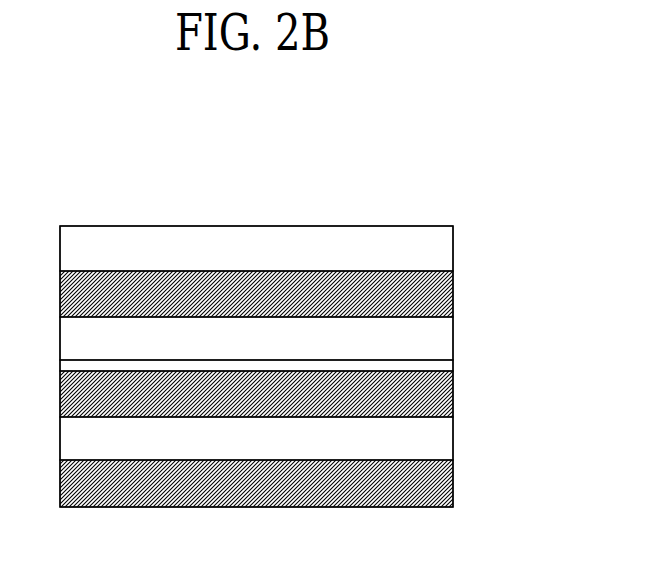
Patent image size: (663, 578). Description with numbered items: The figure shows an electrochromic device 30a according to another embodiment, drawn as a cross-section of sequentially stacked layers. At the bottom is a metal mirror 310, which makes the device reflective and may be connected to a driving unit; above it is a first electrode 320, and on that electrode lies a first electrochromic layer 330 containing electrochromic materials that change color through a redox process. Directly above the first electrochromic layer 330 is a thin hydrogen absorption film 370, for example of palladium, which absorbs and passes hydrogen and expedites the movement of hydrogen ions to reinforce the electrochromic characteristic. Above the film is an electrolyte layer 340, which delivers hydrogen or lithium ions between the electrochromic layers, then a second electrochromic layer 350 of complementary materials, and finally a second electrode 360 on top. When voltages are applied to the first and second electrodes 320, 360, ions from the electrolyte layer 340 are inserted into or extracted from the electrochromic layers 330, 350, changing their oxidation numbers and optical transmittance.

The electrochromic device 30a is at (491, 165).
The metal mirror 310 is at (441, 484).
The first electrode 320 is at (441, 439).
The first electrochromic layer 330 is at (441, 394).
The hydrogen absorption film 370 is at (441, 366).
The electrolyte layer 340 is at (441, 339).
The second electrochromic layer 350 is at (441, 294).
The second electrode 360 is at (441, 252).